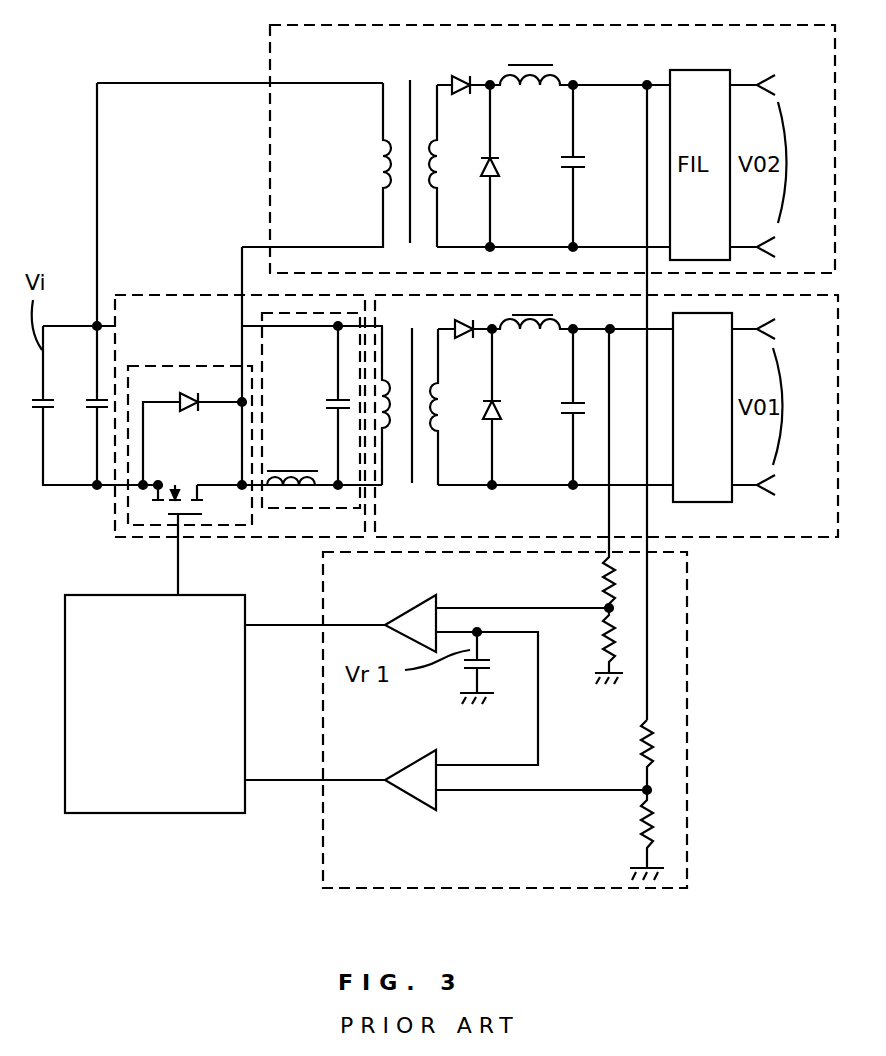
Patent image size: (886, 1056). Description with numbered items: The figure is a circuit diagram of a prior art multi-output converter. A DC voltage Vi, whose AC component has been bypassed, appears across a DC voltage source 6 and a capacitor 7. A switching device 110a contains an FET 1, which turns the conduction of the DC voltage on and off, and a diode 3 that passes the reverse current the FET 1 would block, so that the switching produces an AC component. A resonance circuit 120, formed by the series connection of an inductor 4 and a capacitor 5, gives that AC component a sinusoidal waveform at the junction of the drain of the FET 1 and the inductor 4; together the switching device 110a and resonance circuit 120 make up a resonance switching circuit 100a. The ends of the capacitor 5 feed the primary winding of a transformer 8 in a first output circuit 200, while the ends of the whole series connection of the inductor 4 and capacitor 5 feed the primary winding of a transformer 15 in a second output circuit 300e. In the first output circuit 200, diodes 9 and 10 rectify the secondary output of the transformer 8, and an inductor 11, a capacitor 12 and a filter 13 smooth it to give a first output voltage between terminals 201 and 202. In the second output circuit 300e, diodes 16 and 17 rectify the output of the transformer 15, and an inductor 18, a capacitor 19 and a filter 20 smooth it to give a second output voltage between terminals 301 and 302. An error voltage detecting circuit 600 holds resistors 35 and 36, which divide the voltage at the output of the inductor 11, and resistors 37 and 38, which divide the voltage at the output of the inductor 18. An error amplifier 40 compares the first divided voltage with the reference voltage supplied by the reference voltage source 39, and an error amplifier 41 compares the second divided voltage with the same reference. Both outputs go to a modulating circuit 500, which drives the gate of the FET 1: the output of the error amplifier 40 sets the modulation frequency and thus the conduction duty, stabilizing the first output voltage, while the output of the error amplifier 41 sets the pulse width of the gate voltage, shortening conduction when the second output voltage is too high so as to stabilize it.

The FET 1 is at (172, 480).
The diode 3 is at (182, 395).
The inductor 4 is at (287, 470).
The capacitor 5 is at (328, 397).
The DC voltage source 6 is at (38, 405).
The capacitor 7 is at (88, 405).
The transformer 8 is at (412, 340).
The diode 9 is at (465, 345).
The diode 10 is at (485, 415).
The inductor 11 is at (548, 340).
The capacitor 12 is at (558, 410).
The filter 13 is at (673, 440).
The transformer 15 is at (400, 80).
The diode 16 is at (458, 72).
The diode 17 is at (483, 165).
The inductor 18 is at (545, 95).
The capacitor 19 is at (558, 165).
The filter 20 is at (670, 150).
The resistor 35 is at (603, 576).
The resistor 36 is at (604, 640).
The resistor 37 is at (641, 740).
The resistor 38 is at (641, 828).
The reference voltage source 39 is at (466, 668).
The error amplifier 40 is at (410, 602).
The error amplifier 41 is at (414, 805).
The resonance switching circuit 100a is at (118, 540).
The switching device 110a is at (222, 527).
The resonance circuit 120 is at (260, 305).
The first output circuit 200 is at (808, 540).
The terminal 201 is at (765, 330).
The terminal 202 is at (765, 486).
The second output circuit 300e is at (268, 110).
The terminal 301 is at (792, 66).
The terminal 302 is at (765, 248).
The modulating circuit 500 is at (248, 688).
The error voltage detecting circuit 600 is at (687, 780).